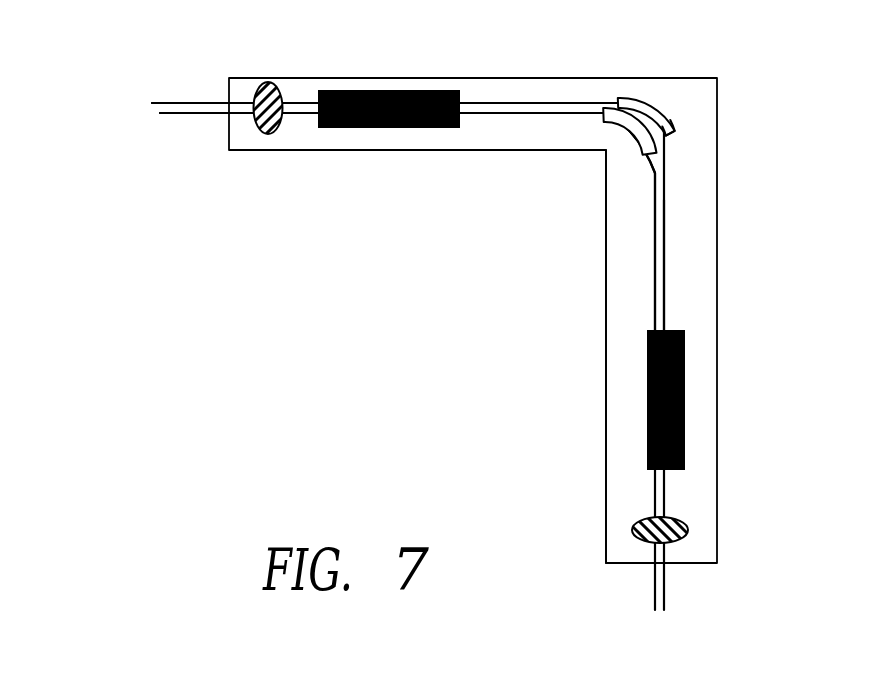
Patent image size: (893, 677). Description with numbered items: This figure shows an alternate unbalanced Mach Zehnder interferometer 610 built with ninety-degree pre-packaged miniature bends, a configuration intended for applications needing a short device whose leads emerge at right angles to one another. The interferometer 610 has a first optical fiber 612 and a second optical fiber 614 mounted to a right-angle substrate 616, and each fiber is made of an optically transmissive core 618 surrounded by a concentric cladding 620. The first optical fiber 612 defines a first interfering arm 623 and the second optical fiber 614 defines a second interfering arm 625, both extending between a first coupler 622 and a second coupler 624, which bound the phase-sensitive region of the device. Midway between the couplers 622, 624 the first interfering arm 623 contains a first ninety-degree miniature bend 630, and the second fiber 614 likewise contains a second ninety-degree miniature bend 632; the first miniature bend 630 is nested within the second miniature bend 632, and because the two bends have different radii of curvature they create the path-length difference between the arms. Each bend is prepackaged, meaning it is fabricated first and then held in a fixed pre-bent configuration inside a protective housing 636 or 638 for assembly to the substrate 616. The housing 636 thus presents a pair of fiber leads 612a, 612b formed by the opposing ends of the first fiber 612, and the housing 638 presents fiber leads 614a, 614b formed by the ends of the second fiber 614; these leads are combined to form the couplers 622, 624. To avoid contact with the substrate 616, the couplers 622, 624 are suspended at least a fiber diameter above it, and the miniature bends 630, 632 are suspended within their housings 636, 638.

The unbalanced Mach Zehnder interferometer 610 is at (417, 190).
The first optical fiber 612 is at (186, 114).
The fiber lead 612a is at (473, 114).
The fiber lead 612b is at (655, 312).
The second optical fiber 614 is at (197, 103).
The fiber lead 614a is at (480, 103).
The fiber lead 614b is at (664, 302).
The right-angle substrate 616 is at (606, 388).
The optically transmissive core 618 is at (160, 114).
The concentric cladding 620 is at (160, 108).
The first coupler 622 is at (403, 90).
The first interfering arm 623 is at (508, 114).
The second coupler 624 is at (647, 432).
The second interfering arm 625 is at (538, 103).
The first 90° miniature bend 630 is at (633, 148).
The second 90° miniature bend 632 is at (643, 109).
The protective housing 636 is at (643, 157).
The protective housing 638 is at (668, 130).